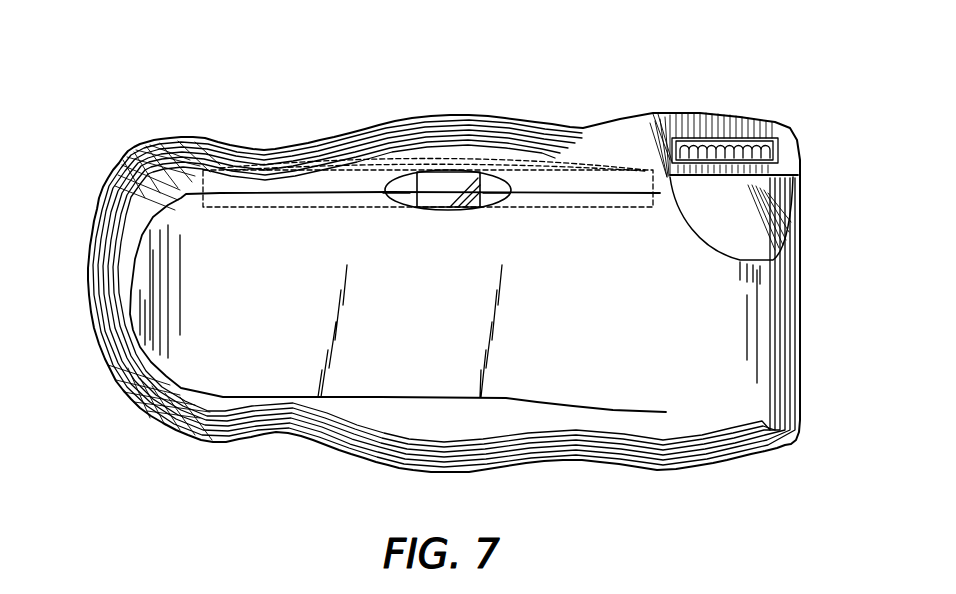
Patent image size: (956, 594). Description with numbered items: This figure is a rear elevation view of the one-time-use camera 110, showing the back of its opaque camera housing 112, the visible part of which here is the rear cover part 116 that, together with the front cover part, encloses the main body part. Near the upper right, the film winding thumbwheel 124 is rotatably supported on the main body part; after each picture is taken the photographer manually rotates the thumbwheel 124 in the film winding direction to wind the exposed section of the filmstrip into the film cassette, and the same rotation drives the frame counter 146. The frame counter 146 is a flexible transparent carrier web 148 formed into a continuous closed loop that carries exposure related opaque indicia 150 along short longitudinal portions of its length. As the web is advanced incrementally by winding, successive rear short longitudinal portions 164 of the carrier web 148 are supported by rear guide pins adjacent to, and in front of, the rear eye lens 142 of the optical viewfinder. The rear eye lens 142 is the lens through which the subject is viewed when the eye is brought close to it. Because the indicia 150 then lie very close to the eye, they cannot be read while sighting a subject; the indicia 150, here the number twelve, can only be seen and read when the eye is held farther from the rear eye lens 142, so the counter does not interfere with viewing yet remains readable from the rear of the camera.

The one-time-use camera 110 is at (166, 102).
The camera housing 112 is at (118, 164).
The rear cover part 116 is at (733, 293).
The film winding thumbwheel 124 is at (720, 147).
The rear eye lens 142 is at (428, 197).
The frame counter 146 is at (313, 163).
The carrier web 148 is at (340, 170).
The exposure related opaque indicia 150 is at (447, 204).
The rear short longitudinal portions 164 is at (473, 187).